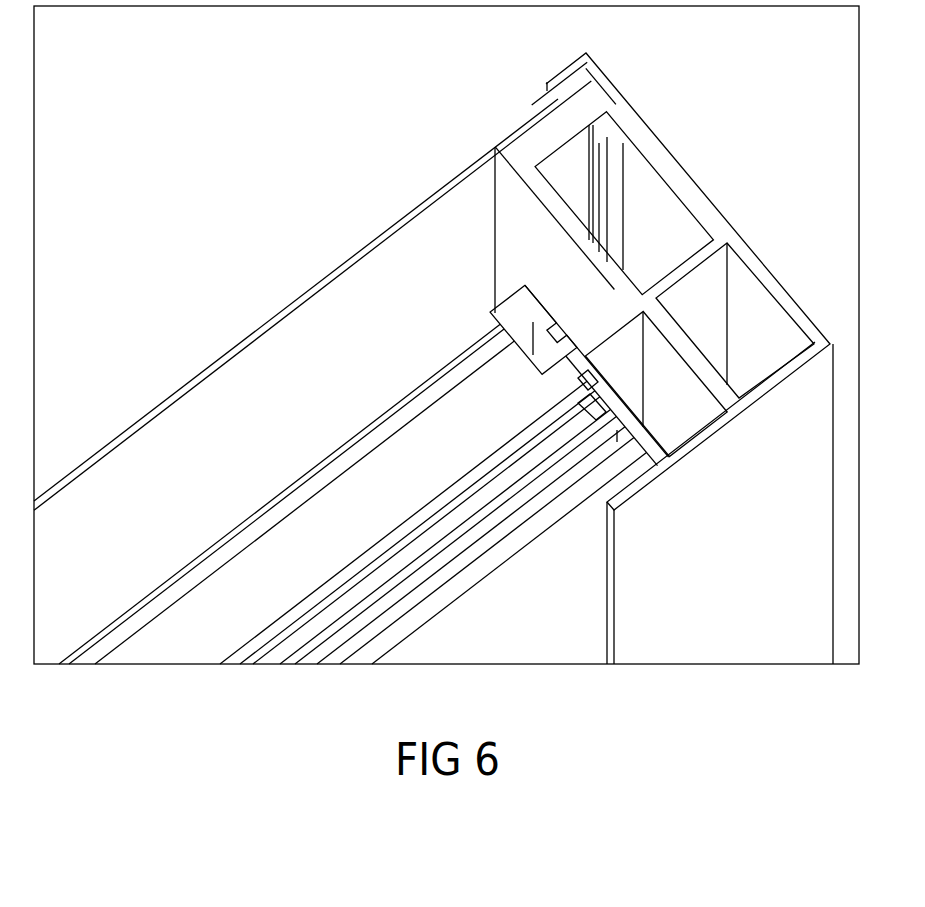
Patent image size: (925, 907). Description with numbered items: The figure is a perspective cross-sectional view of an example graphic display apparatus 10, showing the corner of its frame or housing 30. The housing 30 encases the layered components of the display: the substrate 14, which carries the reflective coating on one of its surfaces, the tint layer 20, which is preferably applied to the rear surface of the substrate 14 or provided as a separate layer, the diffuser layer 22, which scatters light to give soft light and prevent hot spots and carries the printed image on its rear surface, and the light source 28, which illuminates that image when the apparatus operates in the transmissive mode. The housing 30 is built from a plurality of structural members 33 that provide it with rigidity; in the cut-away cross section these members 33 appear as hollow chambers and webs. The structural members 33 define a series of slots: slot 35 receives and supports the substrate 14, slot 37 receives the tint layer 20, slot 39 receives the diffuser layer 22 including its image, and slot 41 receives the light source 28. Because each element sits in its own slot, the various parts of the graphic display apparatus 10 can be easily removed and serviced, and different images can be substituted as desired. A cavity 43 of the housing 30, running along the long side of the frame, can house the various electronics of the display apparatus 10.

The graphic display apparatus 10 is at (765, 130).
The substrate 14 is at (552, 616).
The tint layer 20 is at (335, 637).
The diffuser layer 22 is at (283, 635).
The light source 28 is at (173, 635).
The housing 30 is at (785, 258).
The structural members 33 is at (548, 143).
The slot 35 is at (642, 475).
The slot 37 is at (598, 410).
The slot 39 is at (590, 375).
The slot 41 is at (545, 345).
The cavity 43 is at (143, 492).